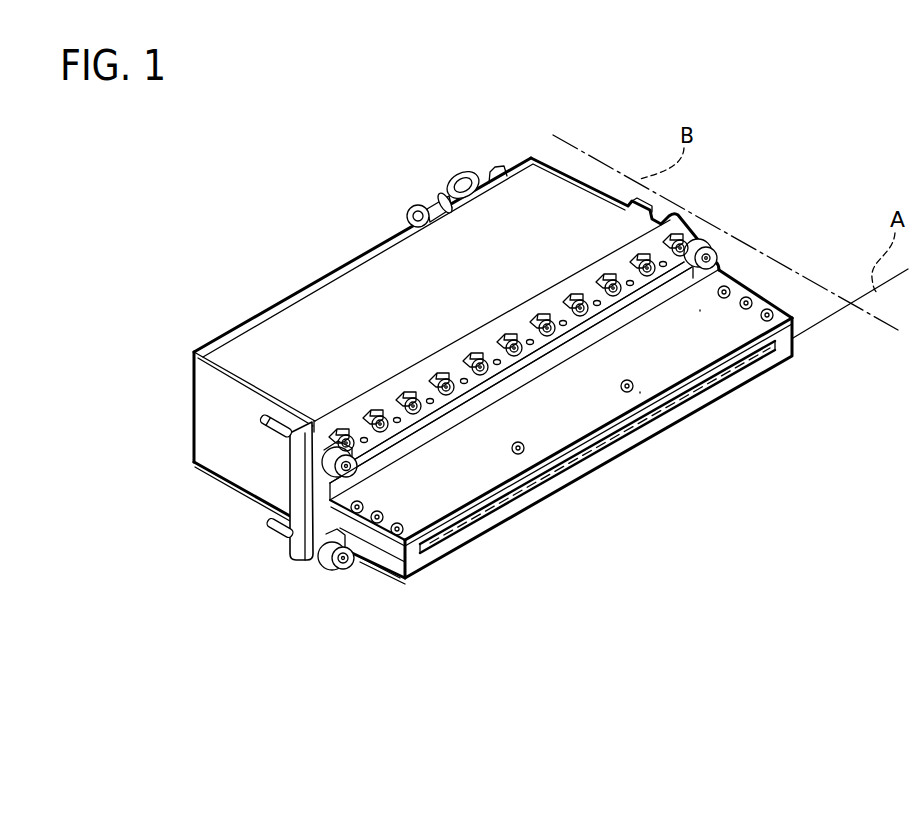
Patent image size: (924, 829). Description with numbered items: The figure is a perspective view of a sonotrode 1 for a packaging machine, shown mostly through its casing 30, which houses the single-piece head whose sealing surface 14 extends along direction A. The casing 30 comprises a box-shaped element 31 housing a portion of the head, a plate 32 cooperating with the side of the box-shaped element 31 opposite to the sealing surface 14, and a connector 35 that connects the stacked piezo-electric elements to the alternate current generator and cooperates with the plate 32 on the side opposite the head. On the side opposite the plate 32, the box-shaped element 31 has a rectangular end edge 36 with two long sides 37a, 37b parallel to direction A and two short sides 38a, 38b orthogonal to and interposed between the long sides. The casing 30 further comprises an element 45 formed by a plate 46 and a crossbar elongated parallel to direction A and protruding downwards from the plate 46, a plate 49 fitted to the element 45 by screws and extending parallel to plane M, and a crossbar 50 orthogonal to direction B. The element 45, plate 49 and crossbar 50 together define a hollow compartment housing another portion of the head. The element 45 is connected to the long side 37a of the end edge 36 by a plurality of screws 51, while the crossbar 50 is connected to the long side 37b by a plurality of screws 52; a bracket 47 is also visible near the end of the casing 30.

The sonotrode 1 is at (478, 360).
The sealing surface 14 is at (512, 505).
The casing 30 is at (449, 390).
The box-shaped element 31 is at (240, 461).
The plate 32 is at (212, 345).
The connector 35 is at (457, 177).
The end edge 36 is at (662, 397).
The long side 37a is at (353, 628).
The long side 37b is at (473, 378).
The short side 38a is at (690, 244).
The short side 38b is at (293, 543).
The element 45 is at (362, 617).
The plate 46 is at (608, 465).
The bracket 47 is at (318, 555).
The plate 49 is at (710, 350).
The crossbar 50 is at (634, 292).
The screws 51 is at (324, 560).
The screws 52 is at (652, 278).